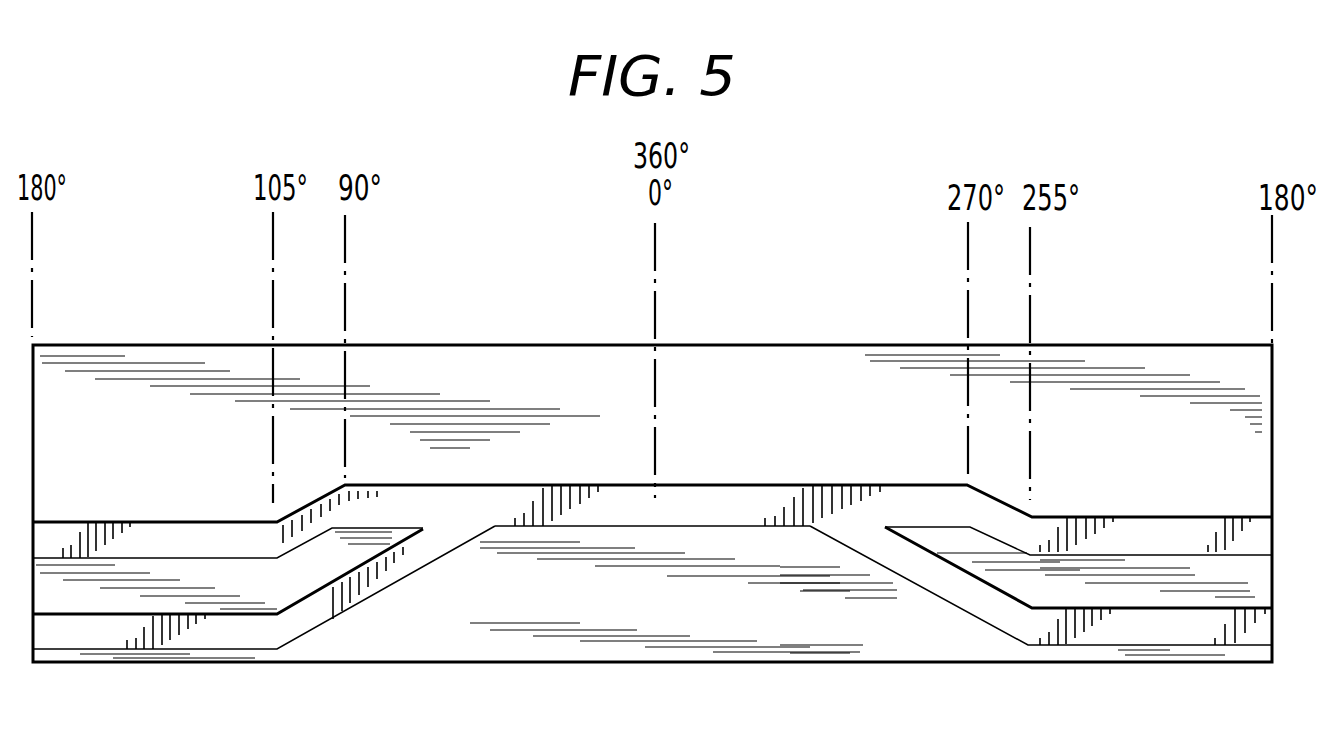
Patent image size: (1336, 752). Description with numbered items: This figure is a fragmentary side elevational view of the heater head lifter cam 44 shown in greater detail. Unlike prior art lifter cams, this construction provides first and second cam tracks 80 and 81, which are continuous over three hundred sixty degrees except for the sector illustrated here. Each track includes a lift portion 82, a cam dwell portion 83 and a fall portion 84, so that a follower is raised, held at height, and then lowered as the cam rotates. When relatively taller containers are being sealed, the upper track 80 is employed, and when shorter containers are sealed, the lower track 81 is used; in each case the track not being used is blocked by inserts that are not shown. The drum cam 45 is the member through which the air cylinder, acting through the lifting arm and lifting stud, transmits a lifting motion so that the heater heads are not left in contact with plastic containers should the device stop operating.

The lifter cam 44 is at (1272, 478).
The drum cam 45 is at (932, 483).
The first cam track 80 is at (1148, 520).
The second cam track 81 is at (1120, 612).
The lift portion 82 is at (305, 503).
The cam dwell portion 83 is at (733, 488).
The fall portion 84 is at (1010, 503).